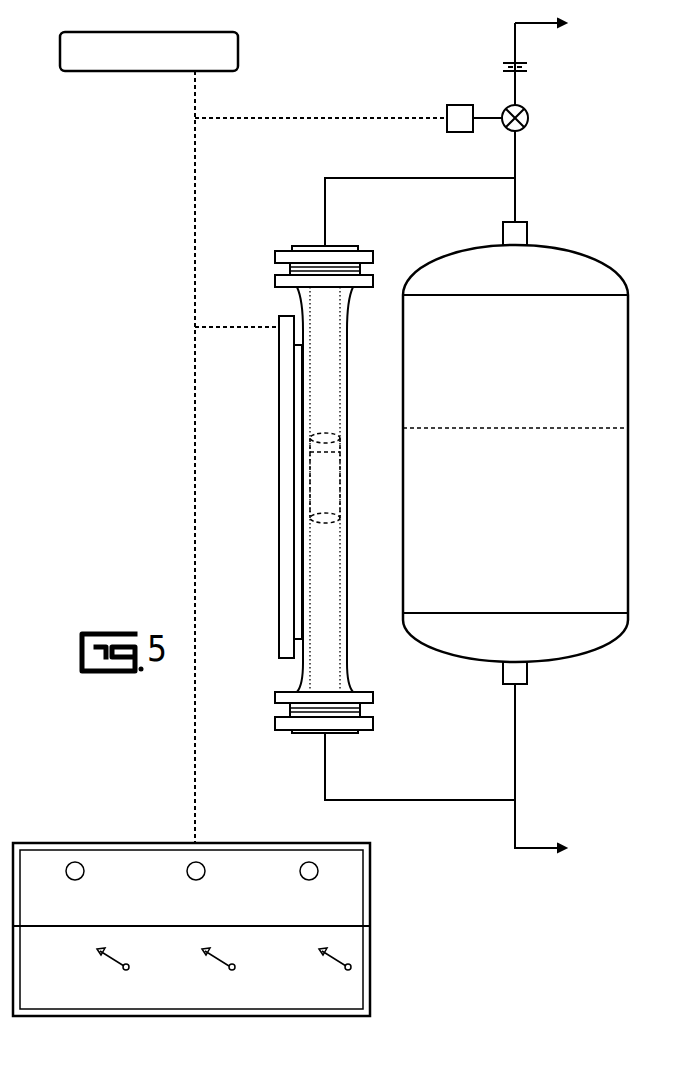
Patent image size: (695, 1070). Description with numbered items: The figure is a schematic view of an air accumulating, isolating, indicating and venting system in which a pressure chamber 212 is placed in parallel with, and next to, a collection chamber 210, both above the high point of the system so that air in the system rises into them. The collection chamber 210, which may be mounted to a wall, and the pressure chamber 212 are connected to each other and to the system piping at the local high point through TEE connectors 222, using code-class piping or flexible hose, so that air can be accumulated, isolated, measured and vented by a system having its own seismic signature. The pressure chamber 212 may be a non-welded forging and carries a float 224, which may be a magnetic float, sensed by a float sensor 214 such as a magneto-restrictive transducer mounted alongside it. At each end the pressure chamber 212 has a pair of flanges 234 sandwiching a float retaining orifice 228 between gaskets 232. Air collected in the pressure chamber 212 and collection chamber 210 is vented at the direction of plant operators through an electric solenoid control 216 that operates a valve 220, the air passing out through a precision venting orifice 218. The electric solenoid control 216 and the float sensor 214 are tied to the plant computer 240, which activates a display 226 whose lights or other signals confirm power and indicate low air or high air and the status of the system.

The plant computer 240 is at (215, 32).
The electric solenoid control 216 is at (448, 106).
The precision venting orifice 218 is at (528, 68).
The valve 220 is at (525, 110).
The TEE connectors 222 is at (518, 178).
The collection chamber 210 is at (565, 268).
The pressure chamber 212 is at (325, 374).
The float sensor 214 is at (279, 607).
The float 224 is at (342, 462).
The display 226 is at (287, 843).
The float retaining orifice 228 is at (290, 269).
The gaskets 232 is at (362, 263).
The flanges 234 is at (290, 252).